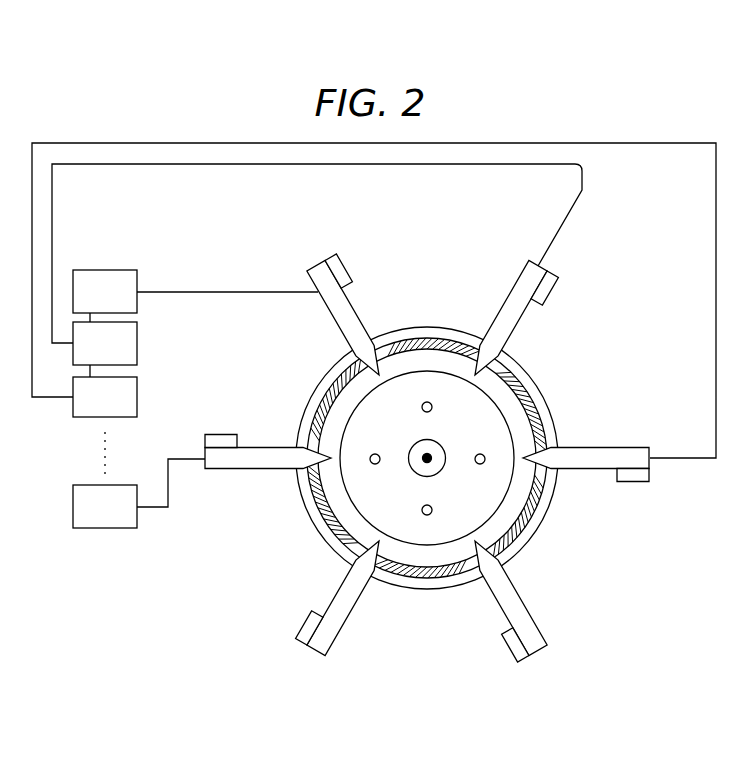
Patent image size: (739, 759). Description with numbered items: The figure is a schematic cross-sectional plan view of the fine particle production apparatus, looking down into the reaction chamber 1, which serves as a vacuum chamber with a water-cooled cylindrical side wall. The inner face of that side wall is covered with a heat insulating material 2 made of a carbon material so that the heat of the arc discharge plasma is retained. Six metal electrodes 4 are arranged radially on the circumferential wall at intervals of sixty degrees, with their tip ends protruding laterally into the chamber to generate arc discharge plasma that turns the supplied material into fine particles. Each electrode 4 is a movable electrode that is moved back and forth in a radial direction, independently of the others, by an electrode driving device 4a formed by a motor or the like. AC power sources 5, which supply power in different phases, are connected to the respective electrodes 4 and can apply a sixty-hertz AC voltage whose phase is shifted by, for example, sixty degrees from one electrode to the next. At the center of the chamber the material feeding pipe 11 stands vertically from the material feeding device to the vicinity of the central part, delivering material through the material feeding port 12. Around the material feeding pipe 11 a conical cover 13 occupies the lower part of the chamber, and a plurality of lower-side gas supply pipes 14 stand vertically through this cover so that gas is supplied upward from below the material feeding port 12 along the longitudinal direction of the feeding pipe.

The reaction chamber 1 is at (532, 377).
The heat insulating material 2 is at (413, 575).
The electrodes 4 is at (497, 312).
The electrode driving devices 4a is at (343, 262).
The AC power sources 5 is at (103, 270).
The material feeding pipe 11 is at (440, 443).
The material feeding port 12 is at (430, 466).
The conical cover 13 is at (487, 507).
The lower-side gas supply pipes 14 is at (427, 402).